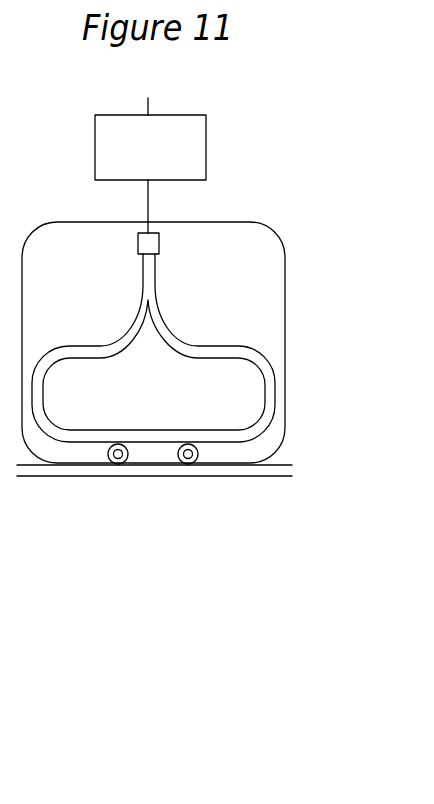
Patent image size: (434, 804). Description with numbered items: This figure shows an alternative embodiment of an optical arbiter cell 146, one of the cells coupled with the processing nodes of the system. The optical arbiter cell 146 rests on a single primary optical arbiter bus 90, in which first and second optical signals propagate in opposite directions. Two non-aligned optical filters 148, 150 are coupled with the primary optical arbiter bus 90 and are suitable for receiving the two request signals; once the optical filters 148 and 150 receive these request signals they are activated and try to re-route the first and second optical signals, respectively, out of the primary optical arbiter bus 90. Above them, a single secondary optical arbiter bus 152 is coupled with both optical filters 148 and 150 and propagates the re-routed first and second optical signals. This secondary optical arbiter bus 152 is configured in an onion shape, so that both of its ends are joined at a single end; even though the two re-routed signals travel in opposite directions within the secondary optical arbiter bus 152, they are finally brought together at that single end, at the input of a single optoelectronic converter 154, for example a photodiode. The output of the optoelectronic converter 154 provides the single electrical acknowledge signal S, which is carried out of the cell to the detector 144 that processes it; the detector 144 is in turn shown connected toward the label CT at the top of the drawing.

The detector 144 is at (150, 147).
The optical arbiter cell 146 is at (285, 287).
The optical filter 148 is at (109, 450).
The optical filter 150 is at (198, 450).
The secondary optical arbiter bus 152 is at (81, 346).
The optoelectronic converter 154 is at (159, 242).
The primary optical arbiter bus 90 is at (292, 467).
The control terminal CT is at (149, 93).
The electrical acknowledge signal S is at (148, 213).